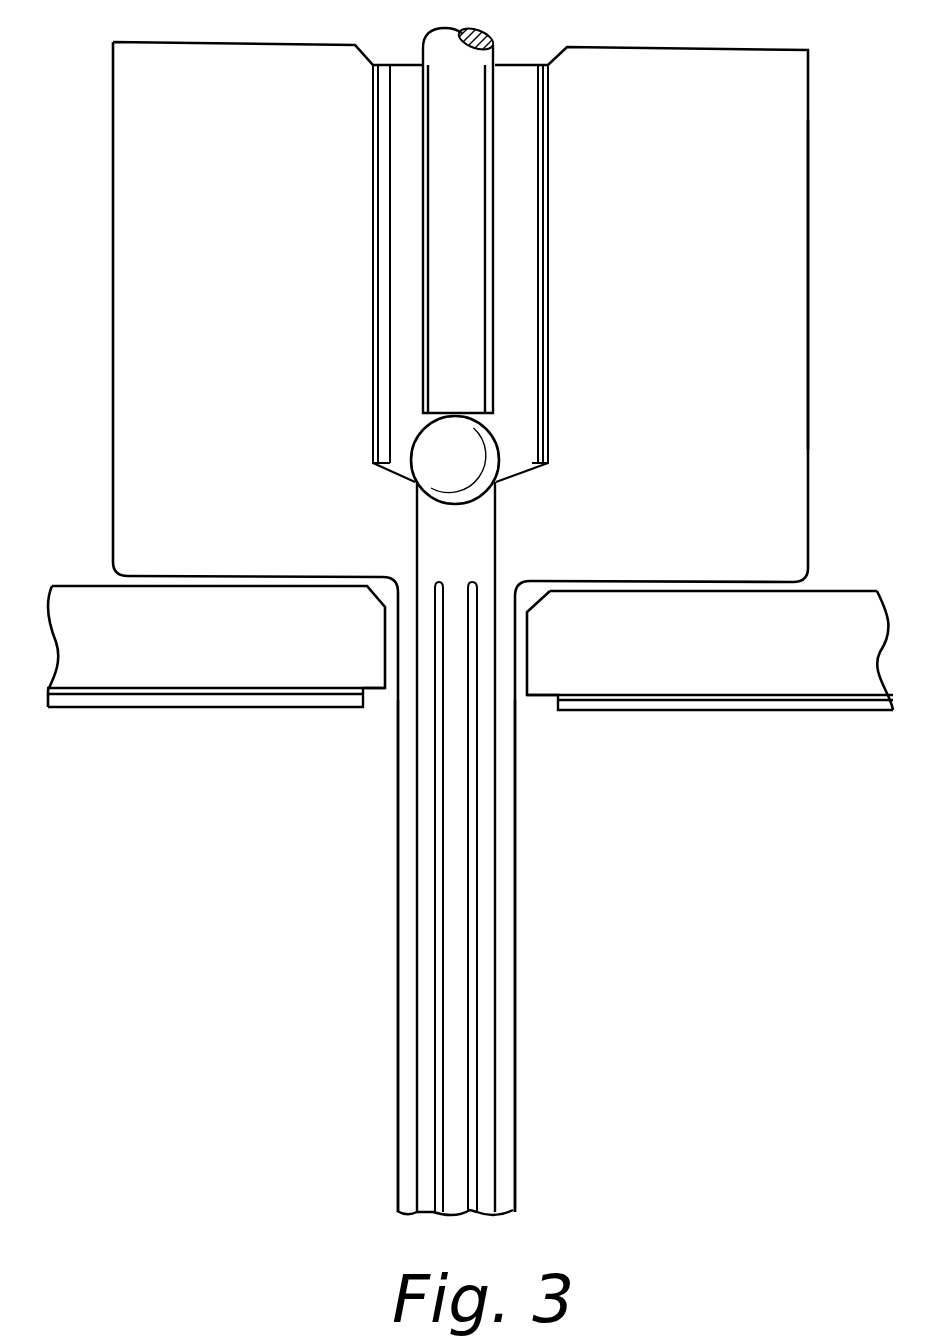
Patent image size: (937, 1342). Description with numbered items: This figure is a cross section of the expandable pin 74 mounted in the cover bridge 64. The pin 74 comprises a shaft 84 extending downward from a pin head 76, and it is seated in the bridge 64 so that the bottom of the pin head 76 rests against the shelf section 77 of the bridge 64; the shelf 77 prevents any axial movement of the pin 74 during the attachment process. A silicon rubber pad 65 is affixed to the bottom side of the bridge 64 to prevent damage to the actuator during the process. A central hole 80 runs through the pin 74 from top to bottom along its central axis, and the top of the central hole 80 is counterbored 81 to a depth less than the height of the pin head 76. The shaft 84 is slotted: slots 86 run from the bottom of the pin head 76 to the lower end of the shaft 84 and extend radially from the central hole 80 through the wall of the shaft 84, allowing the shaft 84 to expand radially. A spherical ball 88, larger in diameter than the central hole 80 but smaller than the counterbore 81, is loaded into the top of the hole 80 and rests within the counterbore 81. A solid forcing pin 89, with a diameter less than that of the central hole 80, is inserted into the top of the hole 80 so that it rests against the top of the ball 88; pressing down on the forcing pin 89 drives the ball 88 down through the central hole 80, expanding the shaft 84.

The cover bridge 64 is at (846, 588).
The silicon rubber pad 65 is at (256, 708).
The expandable pin 74 is at (810, 171).
The pin head 76 is at (808, 400).
The shelf section 77 is at (195, 668).
The central hole 80 is at (476, 518).
The counterbore 81 is at (545, 330).
The shaft 84 is at (517, 835).
The slots 86 is at (434, 838).
The spherical ball 88 is at (497, 438).
The forcing pin 89 is at (490, 231).